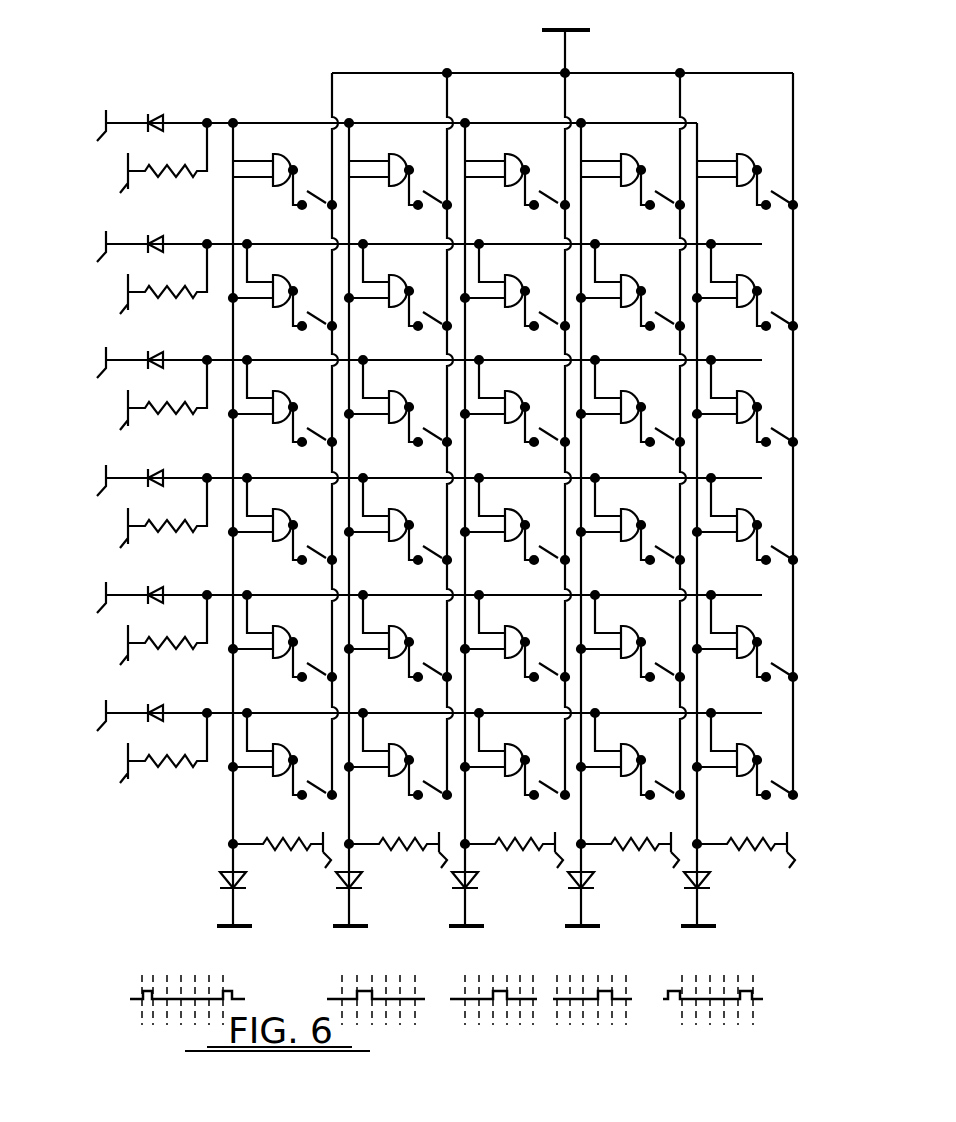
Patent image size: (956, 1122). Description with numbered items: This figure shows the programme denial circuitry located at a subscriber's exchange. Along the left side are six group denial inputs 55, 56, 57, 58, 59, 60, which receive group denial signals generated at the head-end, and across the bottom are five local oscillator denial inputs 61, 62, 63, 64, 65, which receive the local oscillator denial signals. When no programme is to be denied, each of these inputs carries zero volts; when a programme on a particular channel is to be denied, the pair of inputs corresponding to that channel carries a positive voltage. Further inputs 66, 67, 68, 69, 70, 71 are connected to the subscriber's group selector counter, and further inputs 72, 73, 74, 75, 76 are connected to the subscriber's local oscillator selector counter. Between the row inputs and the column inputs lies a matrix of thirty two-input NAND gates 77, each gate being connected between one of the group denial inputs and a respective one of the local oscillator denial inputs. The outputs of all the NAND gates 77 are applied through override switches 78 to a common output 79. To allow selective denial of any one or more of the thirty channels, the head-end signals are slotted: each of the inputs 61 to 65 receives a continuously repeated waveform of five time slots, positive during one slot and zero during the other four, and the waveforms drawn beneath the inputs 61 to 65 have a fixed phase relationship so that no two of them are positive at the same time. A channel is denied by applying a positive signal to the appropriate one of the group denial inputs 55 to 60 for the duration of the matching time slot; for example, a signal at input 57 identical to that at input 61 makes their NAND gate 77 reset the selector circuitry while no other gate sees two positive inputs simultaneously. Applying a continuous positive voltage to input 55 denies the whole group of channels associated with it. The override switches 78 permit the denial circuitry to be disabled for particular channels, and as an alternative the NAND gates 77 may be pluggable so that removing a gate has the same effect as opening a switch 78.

The group denial input 55 is at (128, 141).
The group denial input 56 is at (128, 262).
The group denial input 57 is at (128, 378).
The group denial input 58 is at (128, 496).
The group denial input 59 is at (128, 613).
The group denial input 60 is at (128, 731).
The local oscillator denial input 61 is at (177, 977).
The local oscillator denial input 62 is at (370, 972).
The local oscillator denial input 63 is at (482, 972).
The local oscillator denial input 64 is at (596, 972).
The local oscillator denial input 65 is at (713, 972).
The further input 66 is at (153, 162).
The further input 67 is at (153, 282).
The further input 68 is at (153, 398).
The further input 69 is at (153, 516).
The further input 70 is at (153, 633).
The further input 71 is at (153, 751).
The further input 72 is at (280, 863).
The further input 73 is at (396, 863).
The further input 74 is at (512, 863).
The further input 75 is at (628, 863).
The further input 76 is at (744, 863).
The two-input NAND gate 77 is at (291, 165).
The override switch 78 is at (307, 204).
The output 79 is at (556, 29).